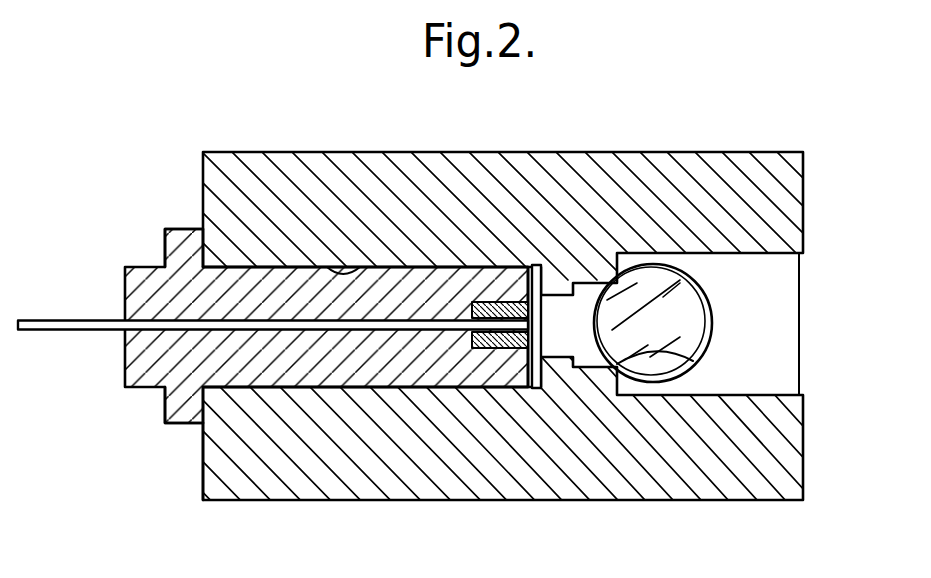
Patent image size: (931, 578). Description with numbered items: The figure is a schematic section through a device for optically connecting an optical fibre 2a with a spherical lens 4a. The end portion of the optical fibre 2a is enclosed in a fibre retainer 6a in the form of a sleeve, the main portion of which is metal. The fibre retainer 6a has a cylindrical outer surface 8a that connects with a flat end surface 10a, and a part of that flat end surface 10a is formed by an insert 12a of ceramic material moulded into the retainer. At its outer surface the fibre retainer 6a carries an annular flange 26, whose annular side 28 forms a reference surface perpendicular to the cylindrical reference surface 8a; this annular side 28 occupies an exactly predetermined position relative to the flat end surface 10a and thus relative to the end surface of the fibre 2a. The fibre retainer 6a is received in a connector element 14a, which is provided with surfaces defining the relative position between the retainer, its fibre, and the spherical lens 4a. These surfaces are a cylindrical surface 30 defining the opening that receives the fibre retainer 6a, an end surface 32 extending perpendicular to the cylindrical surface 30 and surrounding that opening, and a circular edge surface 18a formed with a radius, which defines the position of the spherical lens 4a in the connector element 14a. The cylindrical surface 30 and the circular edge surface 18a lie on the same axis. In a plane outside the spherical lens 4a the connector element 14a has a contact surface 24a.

The optical fibre 2a is at (80, 331).
The spherical lens 4a is at (688, 307).
The fibre retainer 6a is at (283, 297).
The cylindrical outer surface 8a is at (460, 267).
The flat end surface 10a is at (543, 263).
The insert 12a is at (490, 350).
The connector element 14a is at (248, 193).
The circular edge surface 18a is at (695, 362).
The contact surface 24a is at (807, 468).
The annular flange 26 is at (182, 248).
The annular side 28 is at (206, 426).
The cylindrical surface 30 is at (363, 267).
The end surface 32 is at (170, 406).